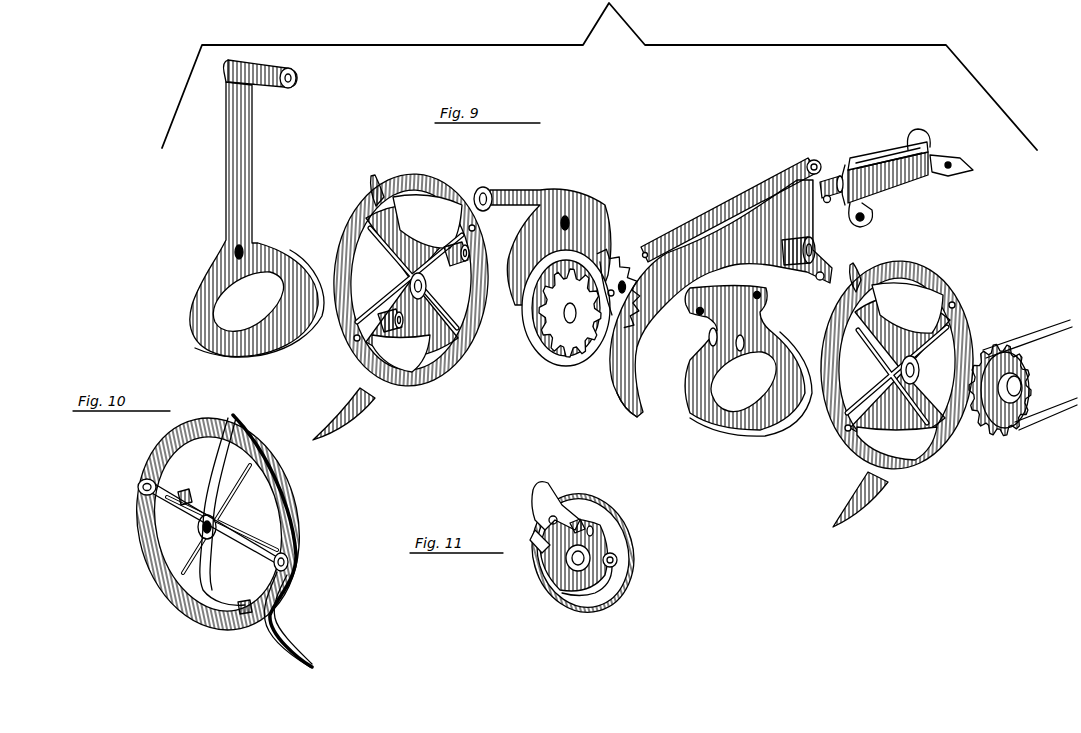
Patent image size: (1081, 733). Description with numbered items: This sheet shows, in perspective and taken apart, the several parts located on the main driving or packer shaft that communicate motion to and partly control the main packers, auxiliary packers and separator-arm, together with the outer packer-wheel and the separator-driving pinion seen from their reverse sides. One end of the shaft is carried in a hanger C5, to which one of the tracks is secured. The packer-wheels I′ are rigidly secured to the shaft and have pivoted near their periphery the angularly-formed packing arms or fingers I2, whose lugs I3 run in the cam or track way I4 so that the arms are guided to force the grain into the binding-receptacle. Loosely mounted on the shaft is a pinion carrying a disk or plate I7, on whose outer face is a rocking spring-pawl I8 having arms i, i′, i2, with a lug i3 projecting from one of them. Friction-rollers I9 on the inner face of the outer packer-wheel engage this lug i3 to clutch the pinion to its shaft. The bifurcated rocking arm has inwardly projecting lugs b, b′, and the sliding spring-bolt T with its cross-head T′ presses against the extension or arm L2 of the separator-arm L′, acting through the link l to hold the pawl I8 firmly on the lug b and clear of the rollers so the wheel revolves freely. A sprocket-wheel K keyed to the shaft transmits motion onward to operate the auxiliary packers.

In FIG. 9, the hanger C5 is at (257, 208).
In FIG. 9, the packer-wheel I′ is at (348, 236).
In FIG. 10, the packer-wheel I′ is at (285, 518).
In FIG. 9, the packing arms or fingers I2 is at (384, 425).
In FIG. 10, the packing arms or fingers I2 is at (215, 470).
In FIG. 10, the lugs I3 is at (184, 506).
In FIG. 9, the cam or track way I4 is at (208, 343).
In FIG. 11, the disk or plate I7 is at (612, 522).
In FIG. 9, the rocking spring-pawl I8 is at (570, 313).
In FIG. 11, the rocking spring-pawl I8 is at (550, 497).
In FIG. 9, the friction-rollers I9 is at (470, 251).
In FIG. 9, the lug b is at (622, 300).
In FIG. 9, the lug b′ is at (510, 305).
In FIG. 9, the link l is at (731, 210).
In FIG. 9, the extension or arm L2 is at (721, 298).
In FIG. 9, the separator-arm L′ is at (619, 405).
In FIG. 9, the sliding spring-bolt T is at (908, 178).
In FIG. 9, the cross-head T′ is at (832, 182).
In FIG. 9, the sprocket-wheel K is at (985, 428).
In FIG. 11, the arm of pawl i is at (535, 490).
In FIG. 11, the arm of pawl i′ is at (540, 547).
In FIG. 11, the arm of pawl i2 is at (585, 522).
In FIG. 11, the lug i3 is at (593, 528).